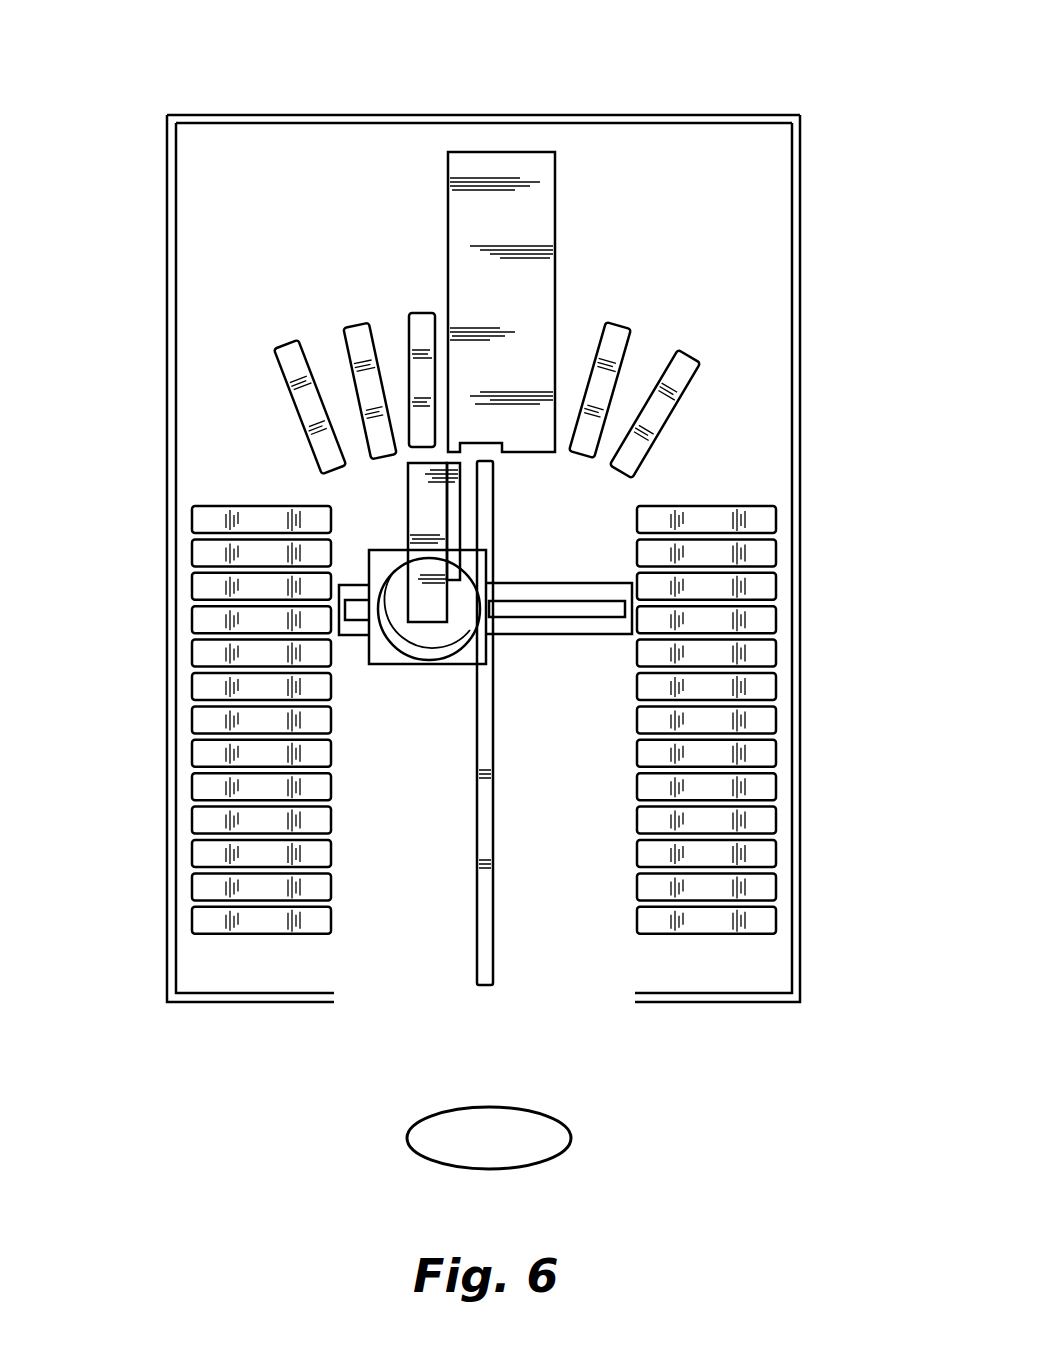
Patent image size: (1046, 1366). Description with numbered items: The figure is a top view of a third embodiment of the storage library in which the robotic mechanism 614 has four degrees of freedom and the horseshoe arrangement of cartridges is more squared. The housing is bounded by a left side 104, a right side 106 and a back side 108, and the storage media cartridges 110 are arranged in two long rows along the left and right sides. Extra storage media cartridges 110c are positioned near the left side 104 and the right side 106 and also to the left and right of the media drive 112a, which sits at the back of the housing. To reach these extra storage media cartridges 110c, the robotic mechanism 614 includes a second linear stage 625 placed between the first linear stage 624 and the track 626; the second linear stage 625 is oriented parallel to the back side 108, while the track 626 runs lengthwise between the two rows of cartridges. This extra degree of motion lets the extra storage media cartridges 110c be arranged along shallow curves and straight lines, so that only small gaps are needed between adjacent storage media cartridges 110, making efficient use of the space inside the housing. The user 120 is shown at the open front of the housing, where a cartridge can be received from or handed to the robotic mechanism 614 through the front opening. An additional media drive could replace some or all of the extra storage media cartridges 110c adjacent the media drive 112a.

The left side 104 is at (167, 362).
The right side 106 is at (801, 328).
The back side 108 is at (373, 114).
The storage media cartridges 110 is at (494, 770).
The extra storage media cartridges 110c is at (494, 436).
The lamp 112a is at (508, 152).
The user 120 is at (572, 1138).
The robotic mechanism 614 is at (452, 692).
The first linear stage 624 is at (385, 655).
The second linear stage 625 is at (572, 628).
The track 626 is at (497, 845).